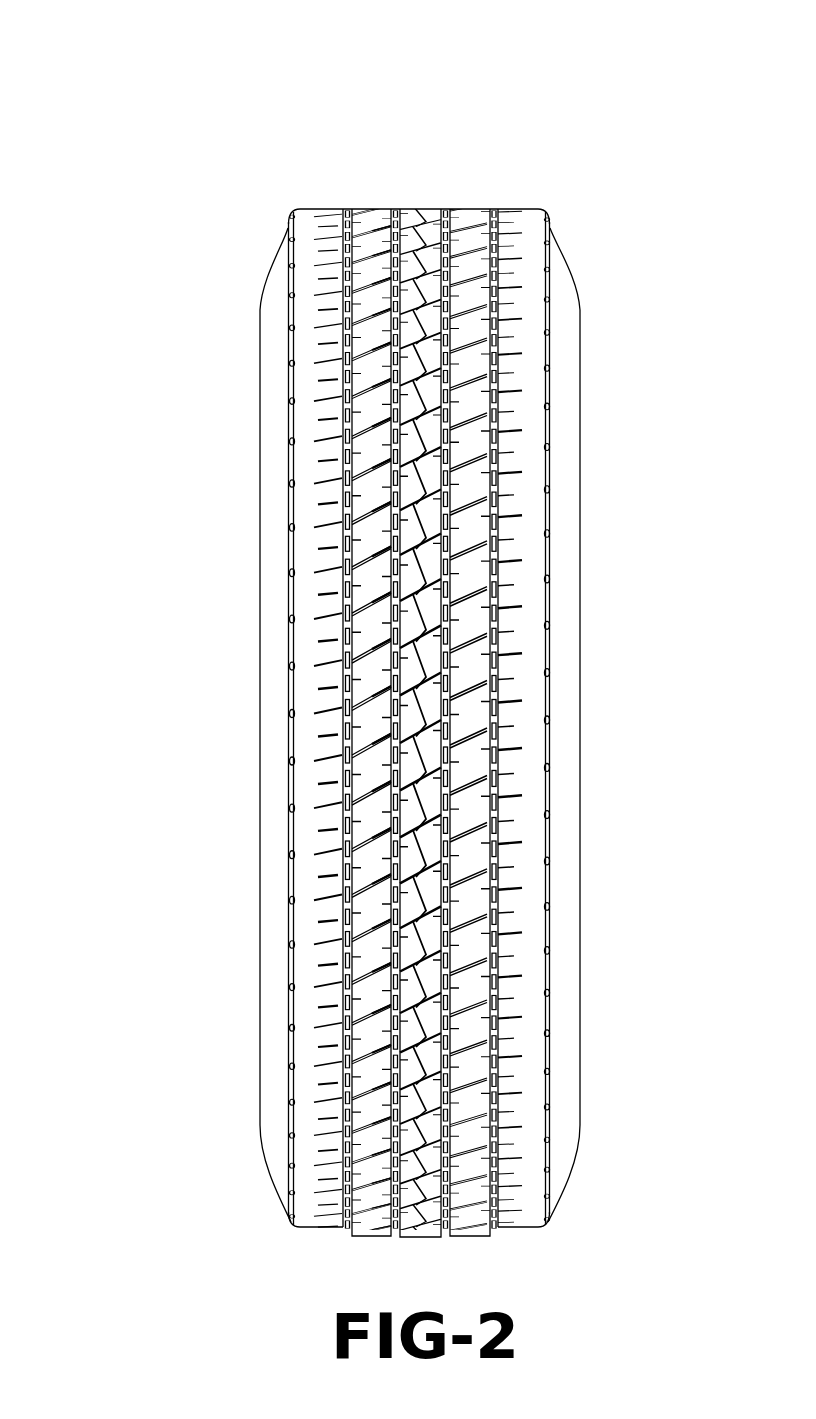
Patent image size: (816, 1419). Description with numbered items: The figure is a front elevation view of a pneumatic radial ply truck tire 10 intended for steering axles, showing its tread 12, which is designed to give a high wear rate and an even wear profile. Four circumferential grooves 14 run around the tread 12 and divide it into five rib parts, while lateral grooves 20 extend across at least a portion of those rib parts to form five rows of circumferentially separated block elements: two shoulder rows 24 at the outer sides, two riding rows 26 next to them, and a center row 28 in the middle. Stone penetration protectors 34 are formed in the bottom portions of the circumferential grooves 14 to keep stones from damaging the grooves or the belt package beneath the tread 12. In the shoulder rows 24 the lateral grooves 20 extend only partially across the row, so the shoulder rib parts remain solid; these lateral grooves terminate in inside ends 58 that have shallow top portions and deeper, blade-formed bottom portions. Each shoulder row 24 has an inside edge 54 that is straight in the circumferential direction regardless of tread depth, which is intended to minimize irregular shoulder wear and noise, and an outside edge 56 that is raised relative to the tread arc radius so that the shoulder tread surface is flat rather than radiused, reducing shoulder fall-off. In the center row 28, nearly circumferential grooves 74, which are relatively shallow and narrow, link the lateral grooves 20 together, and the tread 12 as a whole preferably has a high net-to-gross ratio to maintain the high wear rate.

The tire 10 is at (108, 130).
The tread 12 is at (625, 155).
The circumferential grooves 14 is at (343, 180).
The lateral grooves 20 is at (370, 843).
The shoulder rows 24 is at (304, 188).
The riding rows 26 is at (371, 188).
The center row 28 is at (415, 188).
The stone penetration protectors 34 is at (415, 402).
The inside edges 54 is at (340, 598).
The outside edges 56 is at (308, 670).
The inside ends 58 is at (333, 967).
The nearly circumferential grooves 74 is at (415, 555).